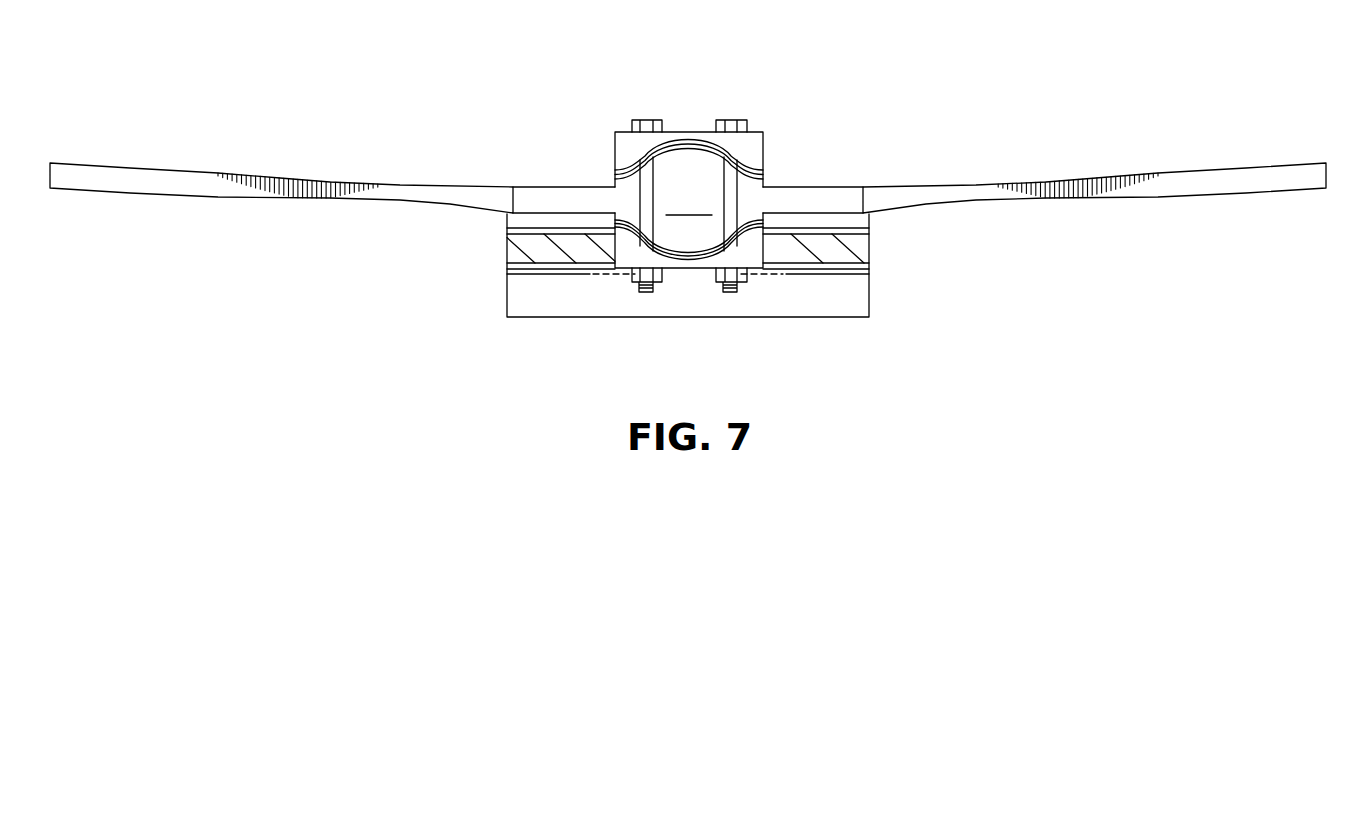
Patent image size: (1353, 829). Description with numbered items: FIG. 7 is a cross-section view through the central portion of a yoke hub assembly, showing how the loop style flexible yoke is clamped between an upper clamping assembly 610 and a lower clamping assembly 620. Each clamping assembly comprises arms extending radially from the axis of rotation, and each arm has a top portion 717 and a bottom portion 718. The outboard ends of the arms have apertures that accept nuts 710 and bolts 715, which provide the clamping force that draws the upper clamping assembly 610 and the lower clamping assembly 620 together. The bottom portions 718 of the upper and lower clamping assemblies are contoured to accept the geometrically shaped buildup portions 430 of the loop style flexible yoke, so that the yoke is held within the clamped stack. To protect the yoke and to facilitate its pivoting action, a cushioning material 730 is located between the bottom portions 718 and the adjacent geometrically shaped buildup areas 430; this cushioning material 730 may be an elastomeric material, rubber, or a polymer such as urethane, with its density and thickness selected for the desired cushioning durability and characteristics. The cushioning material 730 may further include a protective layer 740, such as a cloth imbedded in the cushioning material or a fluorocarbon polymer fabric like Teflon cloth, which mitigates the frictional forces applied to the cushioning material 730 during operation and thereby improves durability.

The geometrically shaped buildup portion 430 is at (688, 204).
The upper clamping assembly 610 is at (705, 122).
The lower clamping assembly 620 is at (703, 278).
The nut 710 is at (633, 273).
The bolt 715 is at (640, 120).
The top portion 717 is at (624, 130).
The bottom portion 718 is at (624, 170).
The cushioning material 730 is at (615, 219).
The protective layer 740 is at (759, 171).